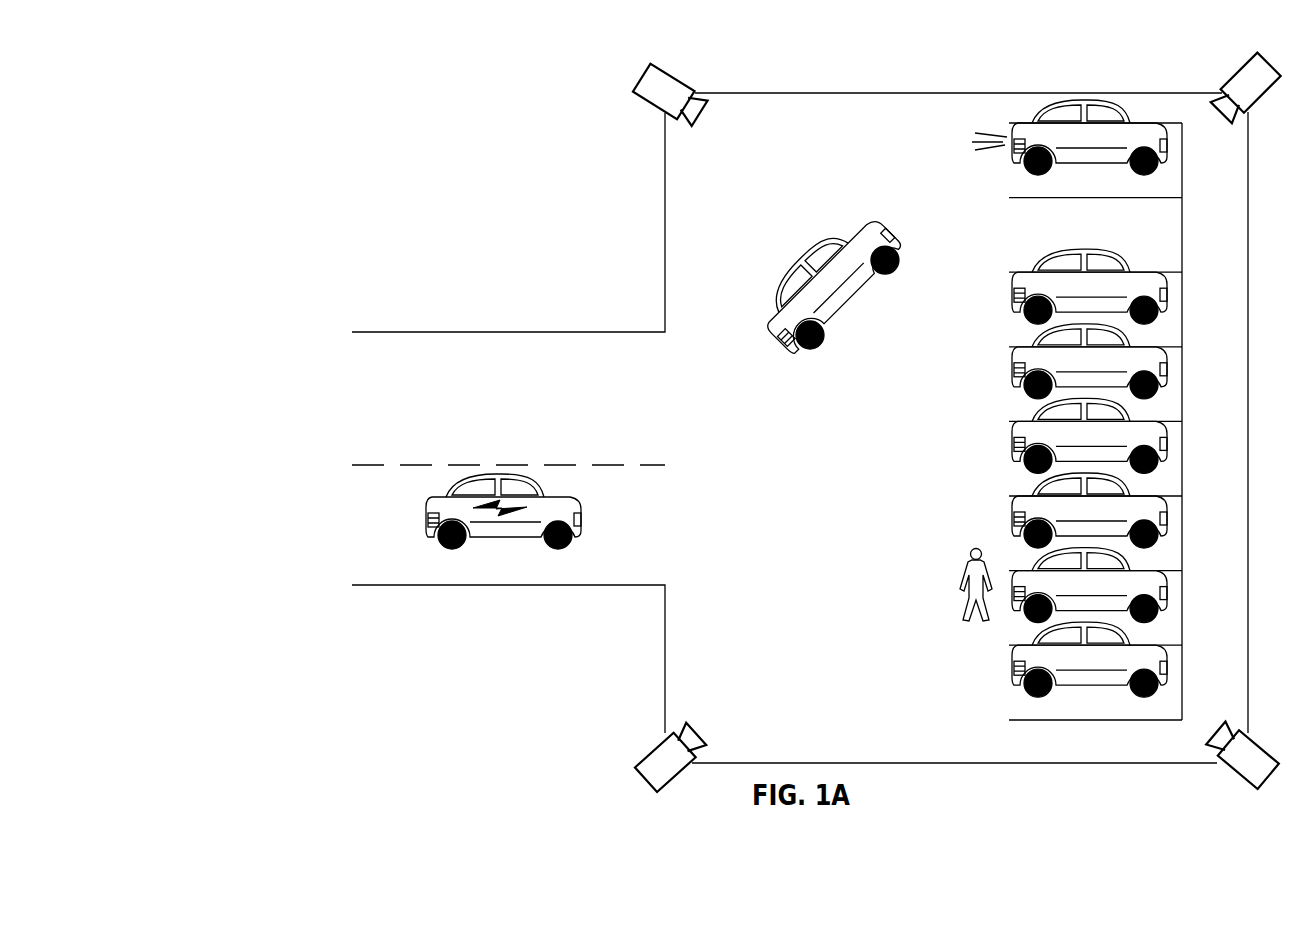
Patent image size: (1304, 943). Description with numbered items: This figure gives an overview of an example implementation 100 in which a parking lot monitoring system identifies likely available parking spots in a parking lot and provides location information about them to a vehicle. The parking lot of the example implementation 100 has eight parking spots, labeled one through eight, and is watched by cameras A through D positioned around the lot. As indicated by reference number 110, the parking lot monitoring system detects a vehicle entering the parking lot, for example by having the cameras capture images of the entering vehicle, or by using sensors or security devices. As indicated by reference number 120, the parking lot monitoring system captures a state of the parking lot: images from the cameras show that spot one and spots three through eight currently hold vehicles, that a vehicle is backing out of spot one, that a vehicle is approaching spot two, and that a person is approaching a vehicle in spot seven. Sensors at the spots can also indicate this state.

The example implementation 100 is at (376, 69).
The detecting a vehicle entering the parking lot 110 is at (508, 659).
The capturing a state of the parking lot 120 is at (508, 196).